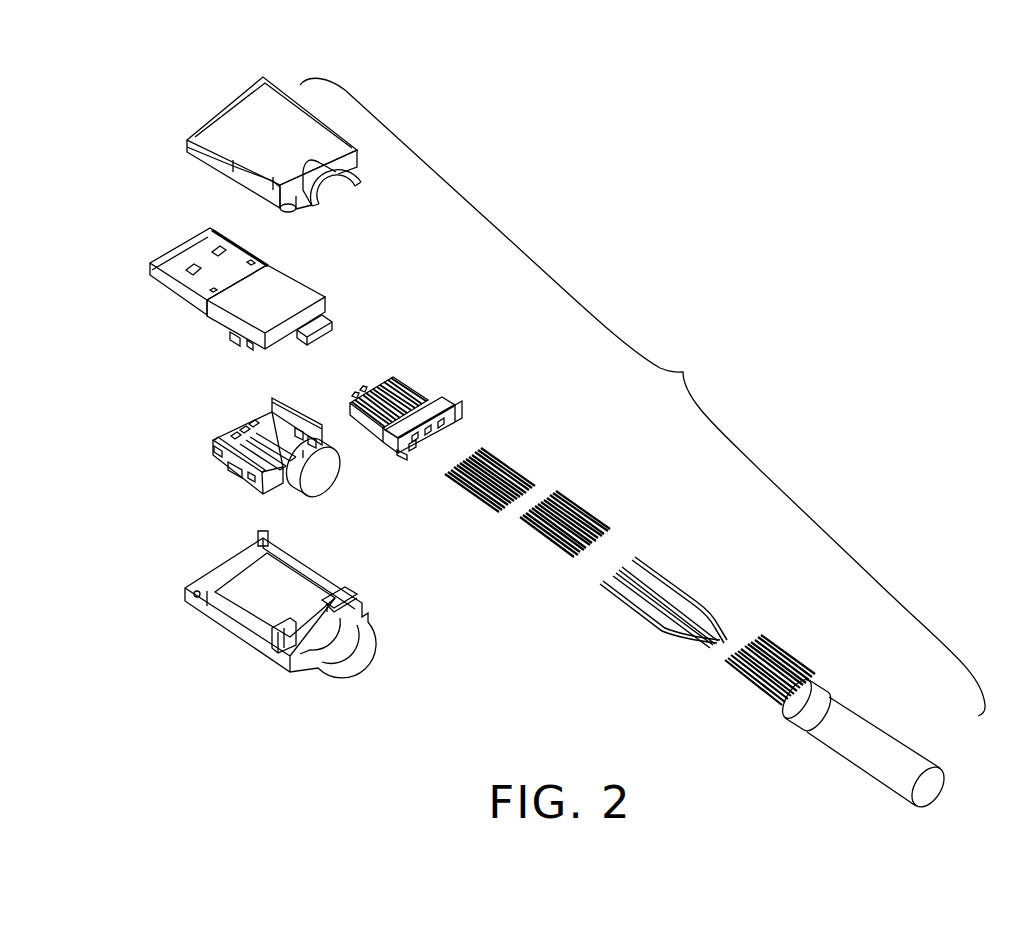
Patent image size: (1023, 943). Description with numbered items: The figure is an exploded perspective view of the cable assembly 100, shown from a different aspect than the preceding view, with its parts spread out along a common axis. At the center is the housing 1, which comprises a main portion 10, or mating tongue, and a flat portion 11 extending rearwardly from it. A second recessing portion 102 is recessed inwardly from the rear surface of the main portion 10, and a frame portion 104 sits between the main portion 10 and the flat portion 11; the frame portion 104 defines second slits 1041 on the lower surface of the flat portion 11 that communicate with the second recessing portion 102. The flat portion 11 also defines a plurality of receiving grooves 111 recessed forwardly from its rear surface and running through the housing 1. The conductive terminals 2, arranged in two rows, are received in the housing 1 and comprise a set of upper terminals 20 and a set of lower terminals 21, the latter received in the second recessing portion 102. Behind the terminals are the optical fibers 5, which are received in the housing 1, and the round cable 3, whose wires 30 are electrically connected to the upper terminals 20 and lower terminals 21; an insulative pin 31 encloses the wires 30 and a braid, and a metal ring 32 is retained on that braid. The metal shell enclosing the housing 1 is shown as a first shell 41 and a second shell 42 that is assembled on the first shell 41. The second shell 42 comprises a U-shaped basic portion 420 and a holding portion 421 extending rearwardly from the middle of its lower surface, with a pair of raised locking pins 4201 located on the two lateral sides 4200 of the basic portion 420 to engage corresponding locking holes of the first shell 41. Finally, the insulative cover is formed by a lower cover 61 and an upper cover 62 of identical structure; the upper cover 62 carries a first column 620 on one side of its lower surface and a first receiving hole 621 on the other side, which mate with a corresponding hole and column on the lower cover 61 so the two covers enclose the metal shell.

The cable assembly 100 is at (677, 372).
The housing 1 is at (442, 418).
The main portion 10 is at (408, 378).
The second recessing portion 102 is at (362, 393).
The frame portion 104 is at (434, 398).
The second slits 1041 is at (405, 455).
The flat portion 11 is at (443, 415).
The receiving grooves 111 is at (413, 447).
The conductive terminals 2 is at (566, 490).
The upper terminals 20 is at (525, 460).
The lower terminals 21 is at (595, 500).
The round cable 3 is at (841, 709).
The wires 30 is at (787, 643).
The insulative pin 31 is at (877, 747).
The metal ring 32 is at (817, 693).
The first shell 41 is at (182, 240).
The second shell 42 is at (222, 408).
The basic portion 420 is at (244, 420).
The lateral sides 4200 is at (213, 452).
The locking pins 4201 is at (233, 470).
The holding portion 421 is at (290, 493).
The optical fibers 5 is at (688, 578).
The lower cover 61 is at (215, 92).
The upper cover 62 is at (222, 548).
The first column 620 is at (267, 650).
The first receiving hole 621 is at (338, 607).